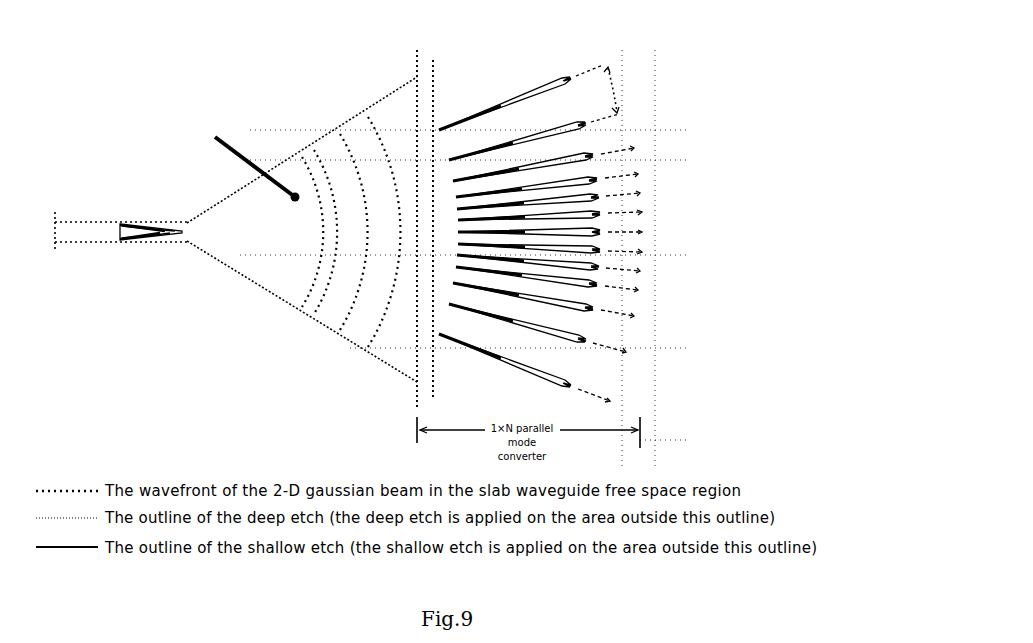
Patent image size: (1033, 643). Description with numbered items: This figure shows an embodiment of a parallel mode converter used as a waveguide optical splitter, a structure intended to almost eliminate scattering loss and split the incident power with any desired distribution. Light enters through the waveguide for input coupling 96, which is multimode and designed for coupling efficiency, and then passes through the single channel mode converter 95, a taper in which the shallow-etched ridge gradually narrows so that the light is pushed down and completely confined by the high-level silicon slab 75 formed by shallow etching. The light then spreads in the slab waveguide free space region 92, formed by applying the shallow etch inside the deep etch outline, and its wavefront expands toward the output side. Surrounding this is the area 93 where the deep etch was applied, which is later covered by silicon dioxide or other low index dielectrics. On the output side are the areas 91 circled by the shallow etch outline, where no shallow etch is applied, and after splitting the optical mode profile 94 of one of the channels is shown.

The high-level silicon slab 75 is at (171, 146).
The shallow etch outline area 91 is at (500, 107).
The slab waveguide free space region 92 is at (378, 155).
The deep etch area 93 is at (210, 300).
The optical mode profile 94 is at (566, 80).
The single channel mode converter 95 is at (147, 237).
The input coupling waveguide 96 is at (89, 229).